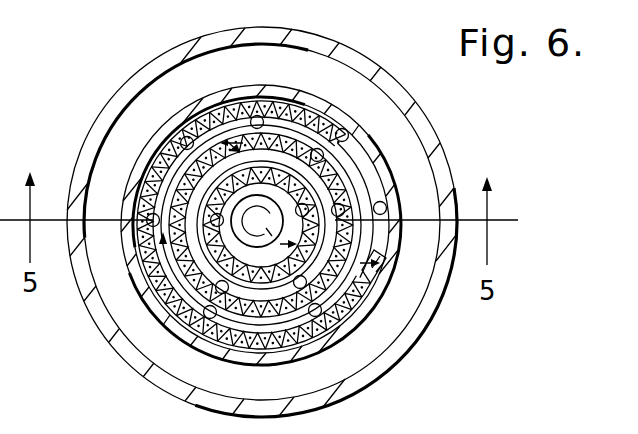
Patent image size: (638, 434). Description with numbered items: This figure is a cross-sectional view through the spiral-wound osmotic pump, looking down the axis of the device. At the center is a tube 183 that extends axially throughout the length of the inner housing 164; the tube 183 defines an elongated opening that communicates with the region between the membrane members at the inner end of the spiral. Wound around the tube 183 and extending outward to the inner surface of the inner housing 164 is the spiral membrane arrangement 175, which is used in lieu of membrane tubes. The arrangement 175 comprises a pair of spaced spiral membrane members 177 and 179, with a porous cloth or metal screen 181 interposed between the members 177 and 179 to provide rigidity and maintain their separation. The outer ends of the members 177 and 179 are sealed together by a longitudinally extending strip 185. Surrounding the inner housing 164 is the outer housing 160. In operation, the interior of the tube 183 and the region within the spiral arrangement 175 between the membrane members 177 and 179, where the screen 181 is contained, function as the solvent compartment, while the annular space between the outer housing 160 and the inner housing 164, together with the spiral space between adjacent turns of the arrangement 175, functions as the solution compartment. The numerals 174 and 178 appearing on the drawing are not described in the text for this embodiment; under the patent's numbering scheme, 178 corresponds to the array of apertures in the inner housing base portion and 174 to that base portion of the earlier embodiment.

The outer housing 160 is at (105, 107).
The inner housing 164 is at (233, 86).
The separator sheet 174 is at (340, 290).
The spiral membrane arrangement 175 is at (285, 102).
The spiral membrane member 177 is at (350, 147).
The spacer tubes 178 is at (216, 316).
The spiral membrane member 179 is at (363, 170).
The porous cloth or metal screen 181 is at (288, 313).
The tube 183 is at (158, 165).
The longitudinally extending strip 185 is at (386, 257).